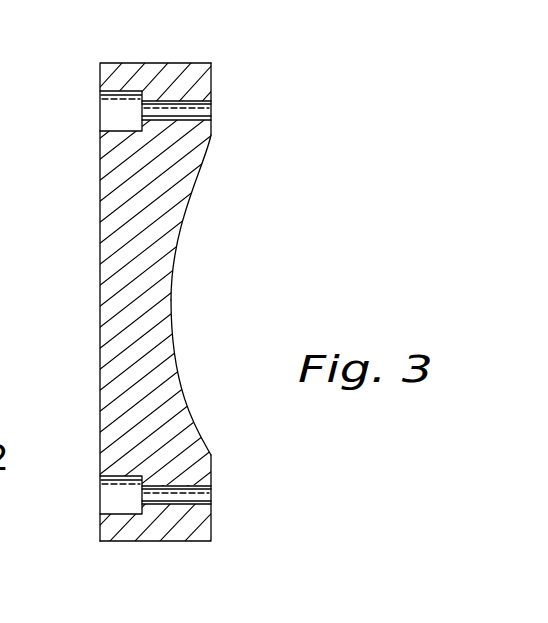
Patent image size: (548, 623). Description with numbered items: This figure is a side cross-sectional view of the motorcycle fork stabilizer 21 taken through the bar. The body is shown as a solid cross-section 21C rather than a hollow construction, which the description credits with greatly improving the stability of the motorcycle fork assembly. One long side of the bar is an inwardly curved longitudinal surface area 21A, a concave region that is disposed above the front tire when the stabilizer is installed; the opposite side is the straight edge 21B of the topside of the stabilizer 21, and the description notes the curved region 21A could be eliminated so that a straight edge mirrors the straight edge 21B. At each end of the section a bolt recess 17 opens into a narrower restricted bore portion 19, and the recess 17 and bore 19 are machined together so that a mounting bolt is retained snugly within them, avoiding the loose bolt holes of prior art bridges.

The motorcycle fork stabilizer 21 is at (124, 64).
The inwardly curved longitudinal surface area 21A is at (196, 181).
The straight edge of the topside 21B is at (213, 66).
The solid cross-section 21C is at (172, 303).
The bolt recess 17 is at (104, 104).
The restricted bore portion 19 is at (199, 122).